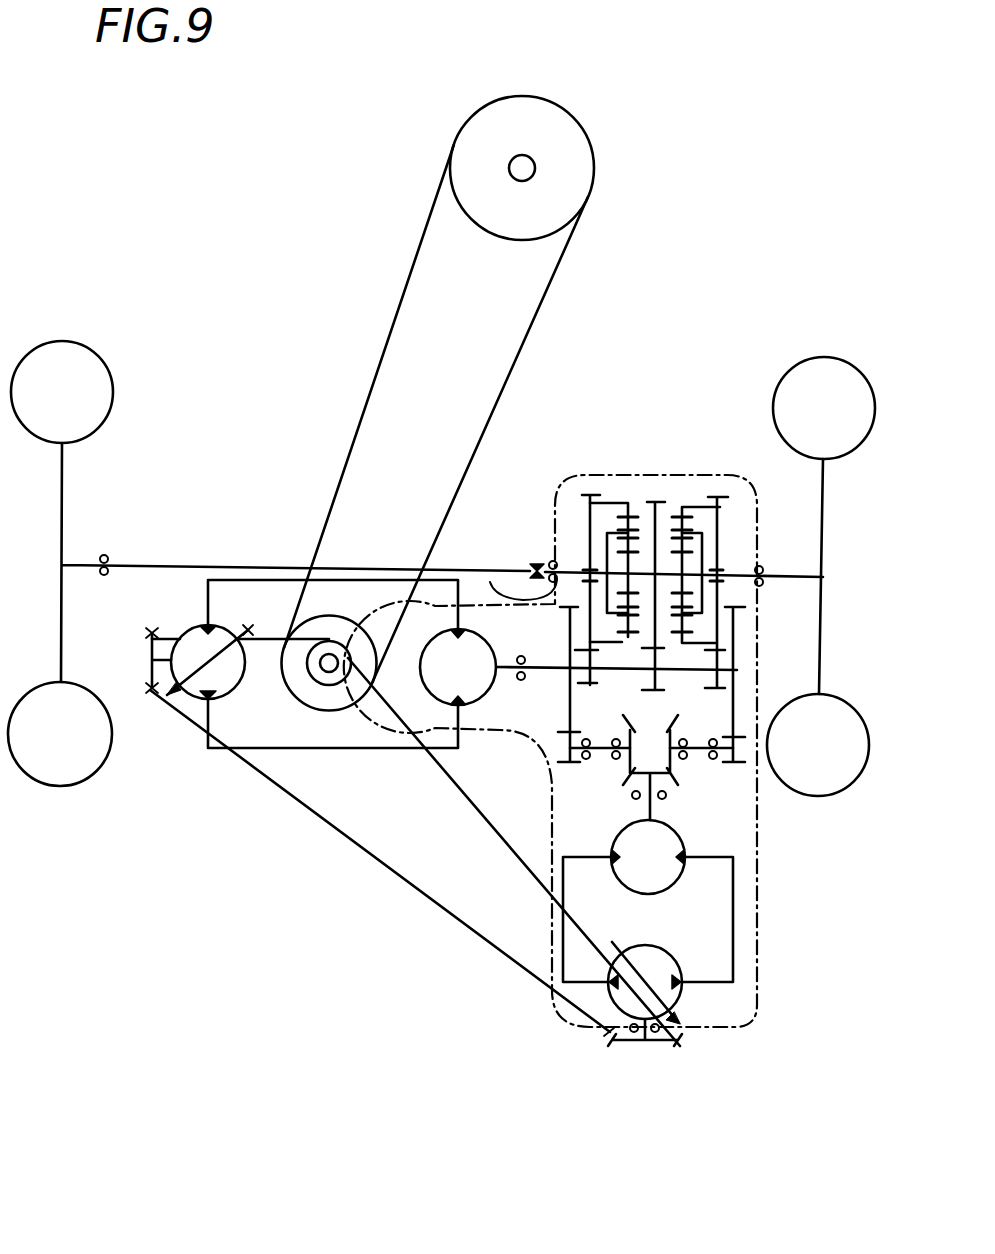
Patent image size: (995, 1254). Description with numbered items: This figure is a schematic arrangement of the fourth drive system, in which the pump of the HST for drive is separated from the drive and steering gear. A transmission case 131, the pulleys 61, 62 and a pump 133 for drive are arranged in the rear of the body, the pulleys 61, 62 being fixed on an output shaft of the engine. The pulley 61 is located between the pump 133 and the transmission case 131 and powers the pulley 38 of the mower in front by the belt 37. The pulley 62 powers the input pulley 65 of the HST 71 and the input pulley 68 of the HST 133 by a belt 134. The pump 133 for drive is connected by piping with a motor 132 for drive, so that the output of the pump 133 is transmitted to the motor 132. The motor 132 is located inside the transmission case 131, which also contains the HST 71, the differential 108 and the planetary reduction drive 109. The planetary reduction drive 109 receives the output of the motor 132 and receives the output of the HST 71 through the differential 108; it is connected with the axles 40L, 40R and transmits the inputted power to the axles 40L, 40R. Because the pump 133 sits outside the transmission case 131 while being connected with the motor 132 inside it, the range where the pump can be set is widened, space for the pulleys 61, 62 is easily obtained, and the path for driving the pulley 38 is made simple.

The pulley of mower 38 is at (557, 128).
The belt 37 is at (412, 254).
The planetary reduction drive 109 is at (677, 493).
The axle 40L is at (148, 565).
The motor for drive 132 is at (478, 643).
The axle 40R is at (778, 577).
The input pulley of the HST 68 is at (152, 636).
The pulley 62 is at (292, 666).
The pulley 61 is at (335, 673).
The pump for drive 133 is at (190, 686).
The belt 134 is at (384, 866).
The differential 108 is at (696, 780).
The HST 71 is at (712, 885).
The transmission case 131 is at (740, 1018).
The input pulley of the HST 65 is at (657, 1042).